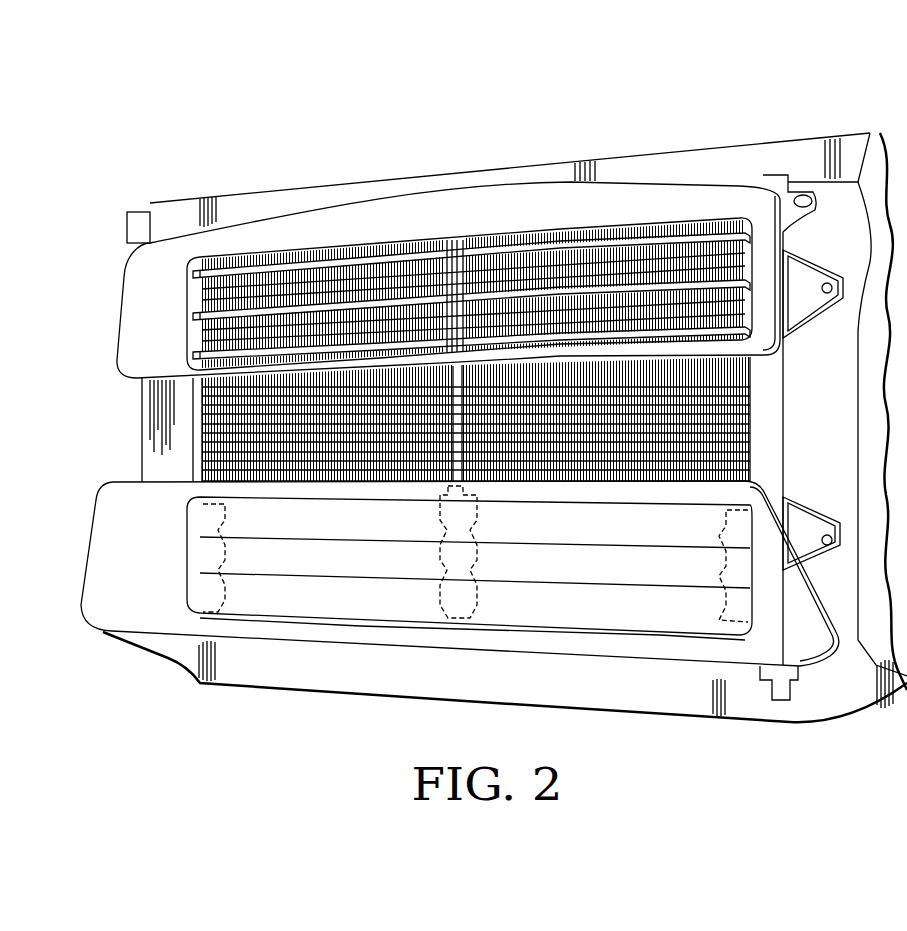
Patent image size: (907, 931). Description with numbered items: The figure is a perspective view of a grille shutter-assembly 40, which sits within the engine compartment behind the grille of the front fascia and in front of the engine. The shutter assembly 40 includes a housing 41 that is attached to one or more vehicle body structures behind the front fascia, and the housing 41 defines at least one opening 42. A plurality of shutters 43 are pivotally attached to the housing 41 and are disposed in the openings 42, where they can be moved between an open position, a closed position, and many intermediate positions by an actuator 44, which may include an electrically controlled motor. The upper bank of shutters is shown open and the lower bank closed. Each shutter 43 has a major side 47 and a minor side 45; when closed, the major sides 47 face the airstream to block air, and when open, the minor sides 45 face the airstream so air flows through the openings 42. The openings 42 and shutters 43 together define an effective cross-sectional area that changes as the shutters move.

The grille shutter-assembly 40 is at (422, 148).
The housing 41 is at (733, 162).
The opening 42 is at (417, 389).
The shutters 43 is at (469, 619).
The actuator 44 is at (455, 432).
The minor side 45 is at (193, 318).
The major side 47 is at (373, 597).